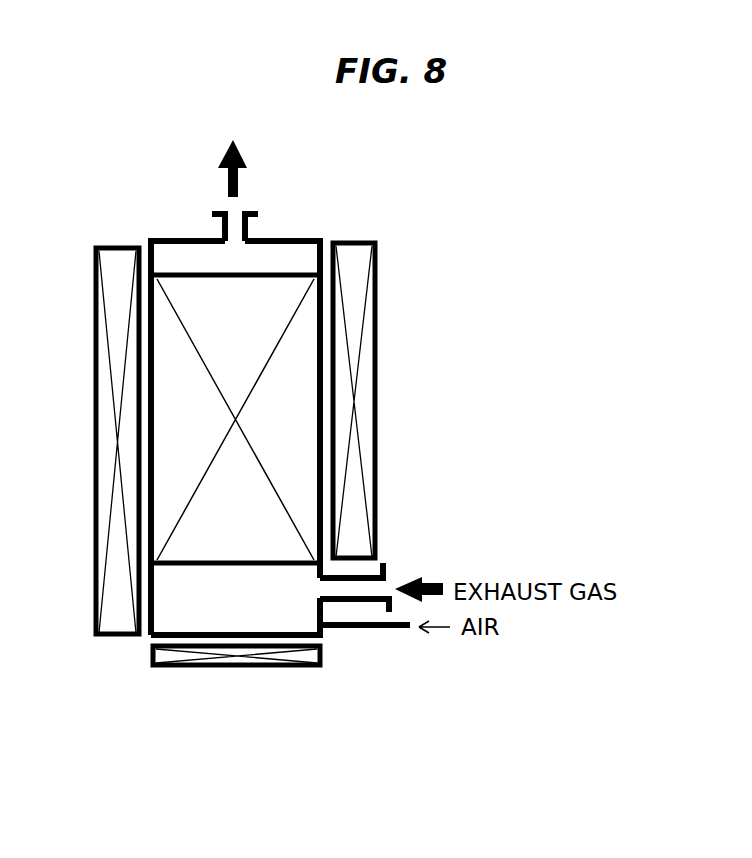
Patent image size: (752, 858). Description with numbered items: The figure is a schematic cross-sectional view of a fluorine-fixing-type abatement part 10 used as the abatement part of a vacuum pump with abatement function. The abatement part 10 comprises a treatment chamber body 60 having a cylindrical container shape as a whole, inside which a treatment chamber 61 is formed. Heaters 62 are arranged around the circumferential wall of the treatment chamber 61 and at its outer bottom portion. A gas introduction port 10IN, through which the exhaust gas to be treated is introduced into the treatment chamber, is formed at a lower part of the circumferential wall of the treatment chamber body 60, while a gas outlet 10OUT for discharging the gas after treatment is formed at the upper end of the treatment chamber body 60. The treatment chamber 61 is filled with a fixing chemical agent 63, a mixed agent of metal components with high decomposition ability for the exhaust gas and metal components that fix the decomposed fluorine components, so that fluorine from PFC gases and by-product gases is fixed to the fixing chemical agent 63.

The fluorine-fixing-type abatement part 10 is at (383, 292).
The gas outlet 10OUT is at (235, 223).
The gas introduction port 10IN is at (383, 589).
The treatment chamber body 60 is at (150, 378).
The treatment chamber 61 is at (172, 253).
The heater 62 is at (96, 452).
The fixing chemical agent 63 is at (300, 410).